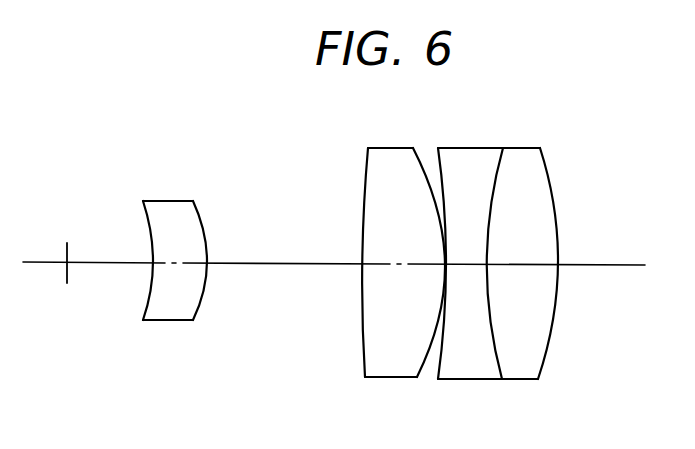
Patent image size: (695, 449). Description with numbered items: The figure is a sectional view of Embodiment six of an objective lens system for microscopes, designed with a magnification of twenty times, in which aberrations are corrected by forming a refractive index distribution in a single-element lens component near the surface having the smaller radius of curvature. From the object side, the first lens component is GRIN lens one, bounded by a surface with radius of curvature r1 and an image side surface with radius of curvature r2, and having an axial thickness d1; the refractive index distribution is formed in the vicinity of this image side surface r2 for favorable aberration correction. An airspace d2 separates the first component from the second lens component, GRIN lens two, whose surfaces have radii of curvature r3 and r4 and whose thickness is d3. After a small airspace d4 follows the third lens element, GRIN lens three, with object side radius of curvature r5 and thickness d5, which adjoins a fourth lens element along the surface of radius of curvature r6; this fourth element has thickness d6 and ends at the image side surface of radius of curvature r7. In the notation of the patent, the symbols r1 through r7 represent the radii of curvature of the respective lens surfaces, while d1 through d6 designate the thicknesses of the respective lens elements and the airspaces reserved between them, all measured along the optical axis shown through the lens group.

The radius of curvature of first surface r1 is at (149, 230).
The radius of curvature of second surface r2 is at (203, 228).
The radius of curvature of third surface r3 is at (366, 188).
The radius of curvature of fourth surface r4 is at (434, 180).
The radius of curvature of fifth surface r5 is at (443, 183).
The radius of curvature of sixth surface r6 is at (495, 185).
The radius of curvature of seventh surface r7 is at (556, 182).
The thickness of first lens element d1 is at (185, 263).
The airspace between first and second lens elements d2 is at (288, 263).
The thickness of second lens element d3 is at (383, 265).
The airspace between second and third lens elements d4 is at (440, 272).
The thickness of third lens element d5 is at (468, 265).
The thickness of fourth lens element d6 is at (523, 265).